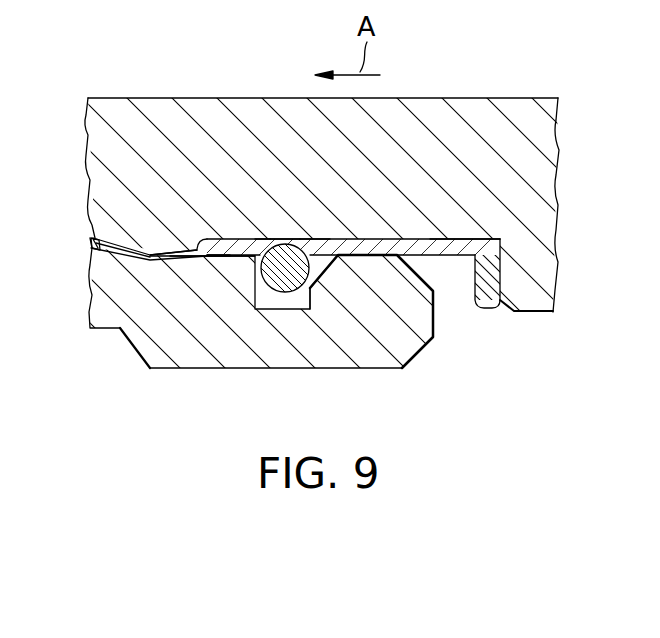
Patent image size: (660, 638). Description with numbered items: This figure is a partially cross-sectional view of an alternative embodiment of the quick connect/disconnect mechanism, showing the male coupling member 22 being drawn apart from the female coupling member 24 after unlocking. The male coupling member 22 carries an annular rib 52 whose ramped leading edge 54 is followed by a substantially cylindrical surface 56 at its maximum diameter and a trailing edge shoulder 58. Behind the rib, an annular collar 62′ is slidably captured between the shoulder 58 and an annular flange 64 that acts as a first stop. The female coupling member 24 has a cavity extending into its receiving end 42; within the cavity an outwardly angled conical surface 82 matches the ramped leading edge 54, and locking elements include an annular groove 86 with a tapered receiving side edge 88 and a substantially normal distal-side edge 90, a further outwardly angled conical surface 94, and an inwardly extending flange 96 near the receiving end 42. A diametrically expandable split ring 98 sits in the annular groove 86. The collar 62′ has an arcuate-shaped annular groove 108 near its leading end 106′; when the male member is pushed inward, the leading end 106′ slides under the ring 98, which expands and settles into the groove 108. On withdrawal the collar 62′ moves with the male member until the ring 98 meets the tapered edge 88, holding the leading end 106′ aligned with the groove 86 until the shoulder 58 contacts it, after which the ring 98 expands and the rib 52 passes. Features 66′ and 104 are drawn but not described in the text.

The male coupling member 22 is at (433, 105).
The female coupling member 24 is at (130, 346).
The receiving end 42 is at (425, 358).
The annular rib 52 is at (181, 235).
The ramped leading edge 54 is at (90, 252).
The substantially cylindrical surface 56 is at (230, 265).
The trailing edge shoulder 58 is at (217, 239).
The annular collar 62′ is at (396, 242).
The annular flange 64 is at (530, 300).
The projecting leg 66′ is at (492, 300).
The outwardly angled conical surface 82 is at (120, 240).
The annular groove 86 is at (313, 306).
The tapered receiving side edge 88 is at (339, 262).
The distal-side edge 90 is at (266, 296).
The outwardly angled conical surface 94 is at (423, 255).
The inwardly extending flange 96 is at (390, 290).
The diametrically expandable ring 98 is at (308, 239).
The sealing surface 104 is at (216, 298).
The leading end 106′ is at (252, 231).
The arcuate-shaped annular groove 108 is at (289, 241).